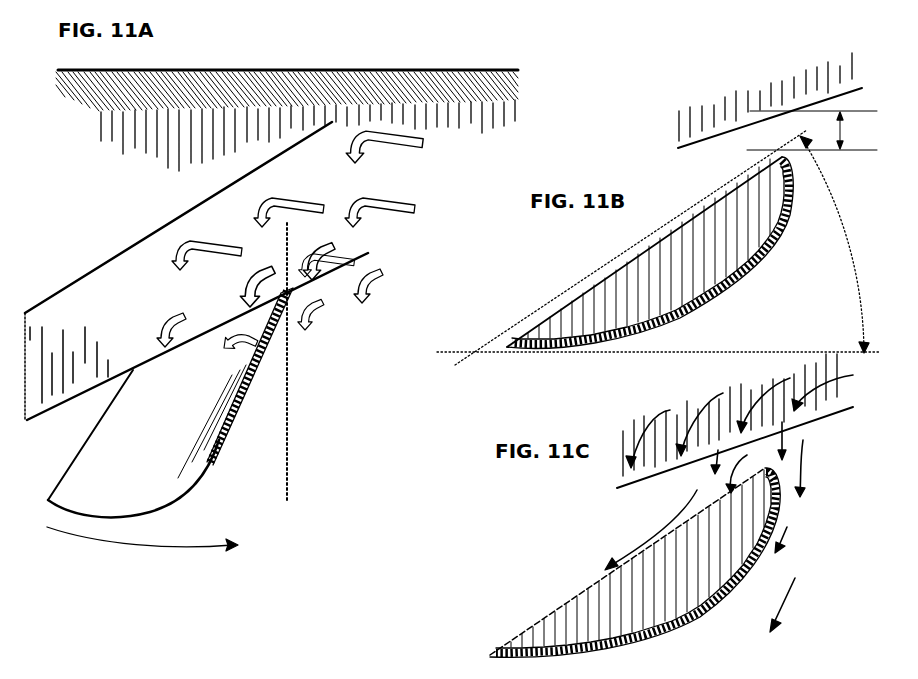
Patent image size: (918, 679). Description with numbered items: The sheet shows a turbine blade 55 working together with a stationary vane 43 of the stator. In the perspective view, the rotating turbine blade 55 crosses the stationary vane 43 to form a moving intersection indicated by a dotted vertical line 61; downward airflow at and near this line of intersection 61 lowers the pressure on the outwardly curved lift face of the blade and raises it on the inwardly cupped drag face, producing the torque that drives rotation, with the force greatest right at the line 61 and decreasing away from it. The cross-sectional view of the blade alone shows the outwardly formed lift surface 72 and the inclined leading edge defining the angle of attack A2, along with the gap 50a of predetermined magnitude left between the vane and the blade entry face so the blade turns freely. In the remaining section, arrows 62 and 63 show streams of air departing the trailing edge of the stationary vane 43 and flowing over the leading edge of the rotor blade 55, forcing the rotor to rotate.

In FIG. 11A, the stationary vane 43 is at (84, 285).
In FIG. 11A, the turbine blade 55 is at (98, 458).
In FIG. 11A, the vertical line of intersection 61 is at (286, 484).
In FIG. 11B, the gap 50a is at (855, 136).
In FIG. 11B, the lift surface 72 is at (773, 240).
In FIG. 11B, the angle of attack A2 is at (834, 244).
In FIG. 11C, the airflow arrow 62 is at (668, 523).
In FIG. 11C, the airflow arrow 63 is at (790, 530).